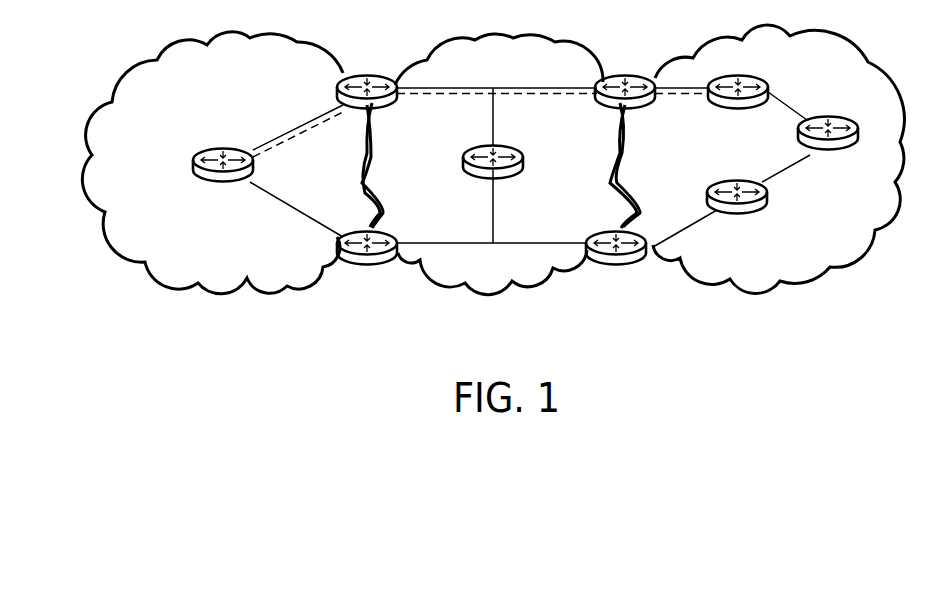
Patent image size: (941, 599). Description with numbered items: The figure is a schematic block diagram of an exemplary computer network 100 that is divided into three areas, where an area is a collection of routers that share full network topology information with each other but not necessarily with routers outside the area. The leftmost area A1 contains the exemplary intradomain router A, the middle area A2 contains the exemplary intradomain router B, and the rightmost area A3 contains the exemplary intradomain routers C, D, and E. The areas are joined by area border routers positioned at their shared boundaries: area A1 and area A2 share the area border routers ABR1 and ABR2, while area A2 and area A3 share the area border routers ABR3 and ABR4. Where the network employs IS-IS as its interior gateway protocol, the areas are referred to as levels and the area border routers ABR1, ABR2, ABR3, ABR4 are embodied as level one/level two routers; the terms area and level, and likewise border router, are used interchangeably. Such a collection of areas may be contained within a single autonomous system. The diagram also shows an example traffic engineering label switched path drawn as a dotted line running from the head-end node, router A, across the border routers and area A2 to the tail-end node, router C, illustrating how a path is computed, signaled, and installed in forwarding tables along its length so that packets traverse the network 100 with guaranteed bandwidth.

The computer network 100 is at (238, 370).
The intradomain router A is at (204, 172).
The intradomain router B is at (509, 164).
The intradomain router C is at (748, 77).
The intradomain router D is at (722, 189).
The intradomain router E is at (832, 154).
The area border router ABR1 is at (374, 66).
The area border router ABR2 is at (352, 272).
The area border router ABR3 is at (638, 66).
The area border router ABR4 is at (623, 272).
The area A1 is at (231, 163).
The area A2 is at (501, 164).
The area A3 is at (757, 159).